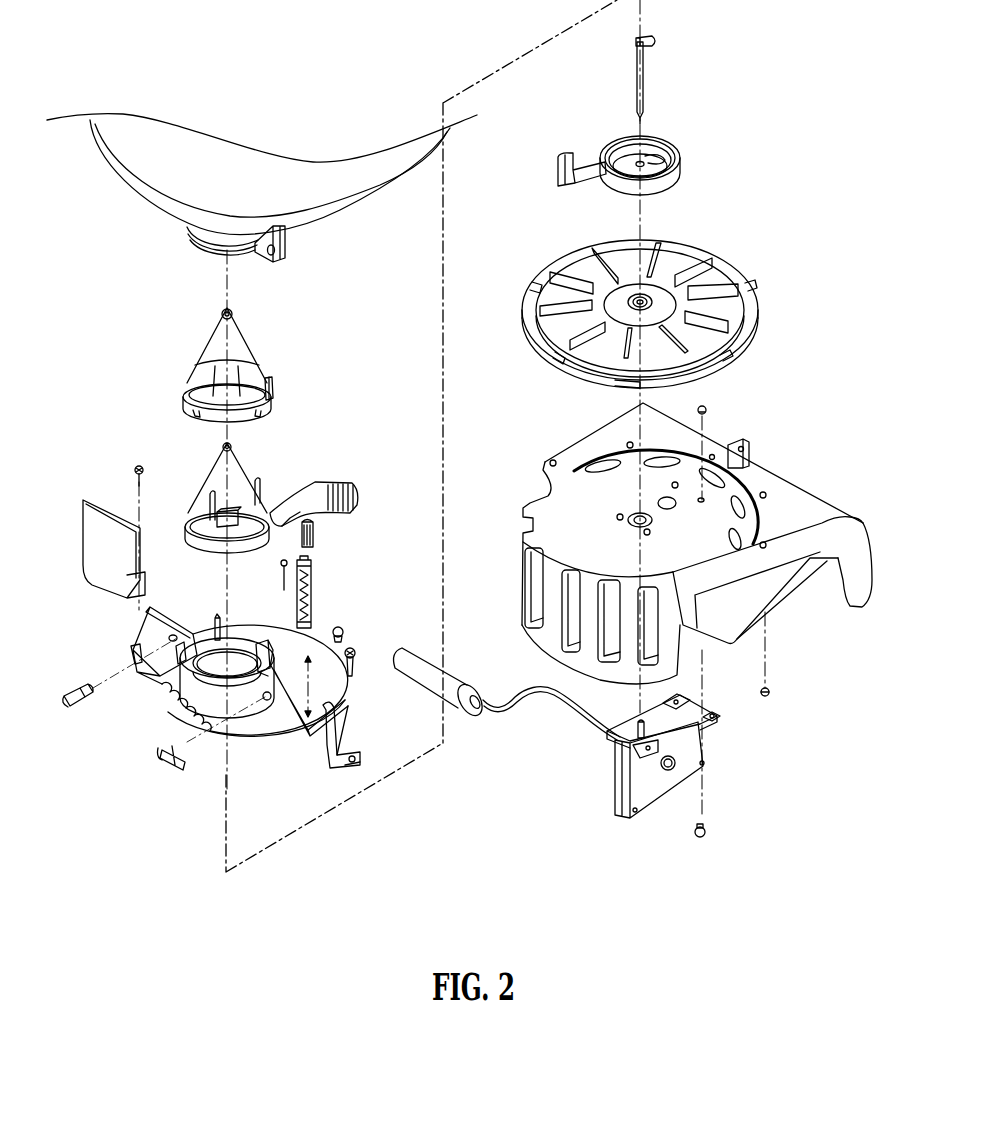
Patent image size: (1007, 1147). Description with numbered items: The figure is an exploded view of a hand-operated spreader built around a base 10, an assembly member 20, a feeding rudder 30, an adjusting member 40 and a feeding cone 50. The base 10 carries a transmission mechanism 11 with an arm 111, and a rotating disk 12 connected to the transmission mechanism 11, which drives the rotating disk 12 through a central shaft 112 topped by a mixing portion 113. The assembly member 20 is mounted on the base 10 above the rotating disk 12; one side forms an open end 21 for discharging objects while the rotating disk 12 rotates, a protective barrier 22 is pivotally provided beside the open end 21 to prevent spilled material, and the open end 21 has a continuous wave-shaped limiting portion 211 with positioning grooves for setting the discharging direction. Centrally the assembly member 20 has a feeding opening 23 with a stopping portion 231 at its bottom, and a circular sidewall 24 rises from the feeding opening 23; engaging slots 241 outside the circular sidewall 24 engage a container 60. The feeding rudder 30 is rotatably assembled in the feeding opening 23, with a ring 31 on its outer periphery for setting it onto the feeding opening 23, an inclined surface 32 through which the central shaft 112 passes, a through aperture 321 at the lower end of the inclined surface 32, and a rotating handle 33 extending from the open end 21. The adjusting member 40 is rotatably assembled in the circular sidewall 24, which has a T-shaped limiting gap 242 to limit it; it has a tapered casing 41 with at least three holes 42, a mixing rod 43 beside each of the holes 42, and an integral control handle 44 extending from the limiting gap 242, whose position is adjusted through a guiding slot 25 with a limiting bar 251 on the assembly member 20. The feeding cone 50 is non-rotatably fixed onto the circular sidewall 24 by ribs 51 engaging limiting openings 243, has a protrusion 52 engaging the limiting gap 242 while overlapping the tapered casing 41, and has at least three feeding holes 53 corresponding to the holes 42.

The base 10 is at (793, 453).
The transmission mechanism 11 is at (612, 777).
The arm 111 is at (420, 665).
The central shaft 112 is at (637, 66).
The mixing portion 113 is at (655, 40).
The rotating disk 12 is at (708, 277).
The assembly member 20 is at (231, 694).
The open end 21 is at (150, 702).
The limiting portion 211 is at (162, 712).
The protective barrier 22 is at (93, 517).
The feeding opening 23 is at (278, 639).
The stopping portion 231 is at (197, 655).
The circular sidewall 24 is at (217, 705).
The engaging slots 241 is at (307, 718).
The limiting gap 242 is at (274, 648).
The limiting openings 243 is at (212, 618).
The guiding slot 25 is at (338, 615).
The limiting bar 251 is at (320, 532).
The feeding rudder 30 is at (624, 138).
The ring 31 is at (675, 145).
The inclined surface 32 is at (614, 157).
The through aperture 321 is at (656, 157).
The rotating handle 33 is at (560, 165).
The adjusting member 40 is at (235, 494).
The tapered casing 41 is at (232, 462).
The holes 42 is at (190, 536).
The mixing rod 43 is at (208, 500).
The control handle 44 is at (340, 483).
The feeding cone 50 is at (243, 366).
The ribs 51 is at (190, 412).
The protrusion 52 is at (275, 385).
The feeding holes 53 is at (260, 362).
The container 60 is at (133, 206).